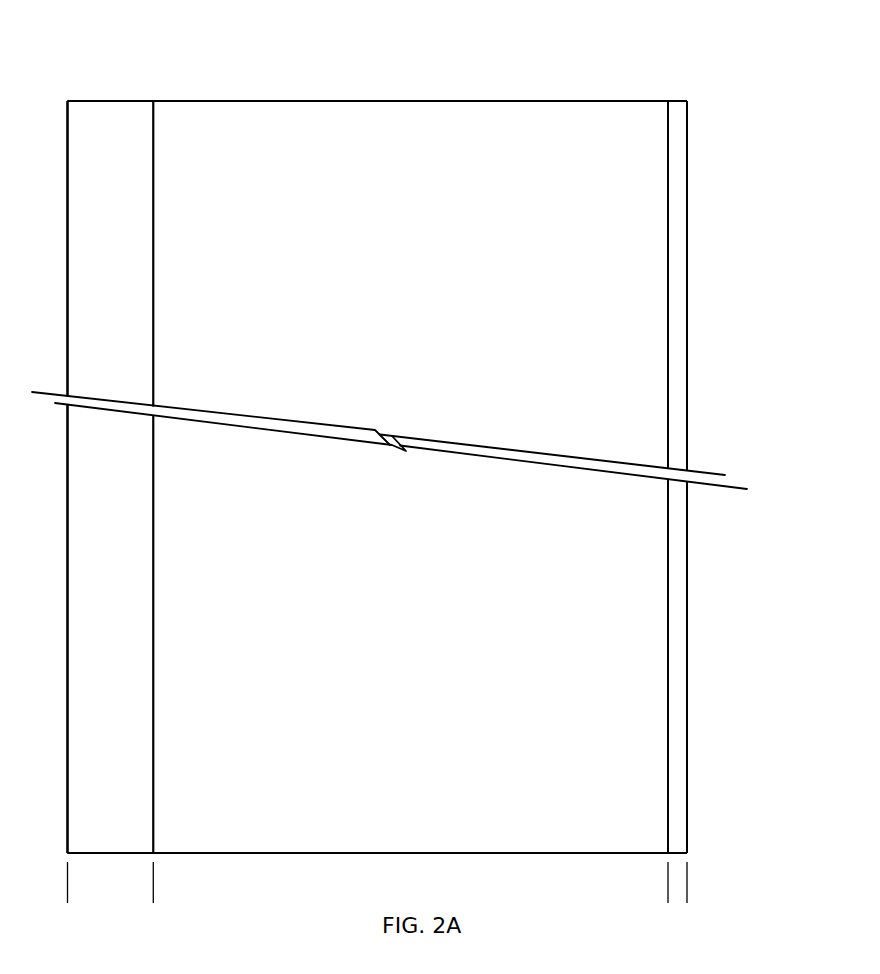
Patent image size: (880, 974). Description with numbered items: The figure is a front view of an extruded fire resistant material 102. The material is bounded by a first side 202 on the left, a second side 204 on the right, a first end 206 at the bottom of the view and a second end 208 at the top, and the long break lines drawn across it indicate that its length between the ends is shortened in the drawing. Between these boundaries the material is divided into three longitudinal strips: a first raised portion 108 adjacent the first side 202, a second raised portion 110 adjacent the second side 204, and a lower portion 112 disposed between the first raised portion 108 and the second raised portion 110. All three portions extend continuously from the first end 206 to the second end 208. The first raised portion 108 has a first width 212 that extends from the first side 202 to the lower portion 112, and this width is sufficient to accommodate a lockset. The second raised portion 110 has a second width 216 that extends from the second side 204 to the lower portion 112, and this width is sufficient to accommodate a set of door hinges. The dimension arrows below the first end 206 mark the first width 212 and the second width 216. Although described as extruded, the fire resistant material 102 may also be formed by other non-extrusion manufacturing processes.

The extruded fire resistant material 102 is at (695, 69).
The first raised portion 108 is at (128, 534).
The second raised portion 110 is at (682, 525).
The lower portion 112 is at (424, 534).
The first side 202 is at (58, 681).
The second side 204 is at (712, 671).
The first end 206 is at (483, 863).
The second end 208 is at (482, 94).
The first width 212 is at (143, 889).
The second width 216 is at (643, 889).